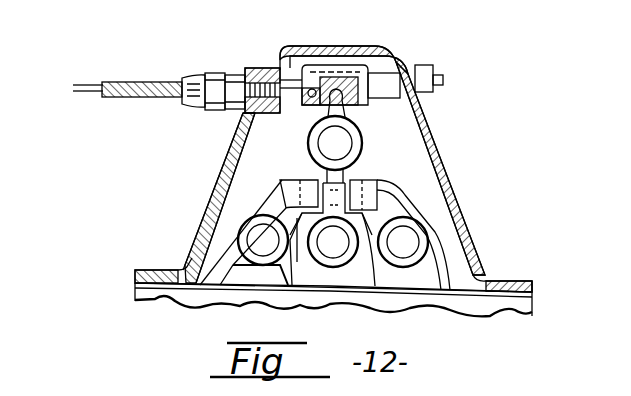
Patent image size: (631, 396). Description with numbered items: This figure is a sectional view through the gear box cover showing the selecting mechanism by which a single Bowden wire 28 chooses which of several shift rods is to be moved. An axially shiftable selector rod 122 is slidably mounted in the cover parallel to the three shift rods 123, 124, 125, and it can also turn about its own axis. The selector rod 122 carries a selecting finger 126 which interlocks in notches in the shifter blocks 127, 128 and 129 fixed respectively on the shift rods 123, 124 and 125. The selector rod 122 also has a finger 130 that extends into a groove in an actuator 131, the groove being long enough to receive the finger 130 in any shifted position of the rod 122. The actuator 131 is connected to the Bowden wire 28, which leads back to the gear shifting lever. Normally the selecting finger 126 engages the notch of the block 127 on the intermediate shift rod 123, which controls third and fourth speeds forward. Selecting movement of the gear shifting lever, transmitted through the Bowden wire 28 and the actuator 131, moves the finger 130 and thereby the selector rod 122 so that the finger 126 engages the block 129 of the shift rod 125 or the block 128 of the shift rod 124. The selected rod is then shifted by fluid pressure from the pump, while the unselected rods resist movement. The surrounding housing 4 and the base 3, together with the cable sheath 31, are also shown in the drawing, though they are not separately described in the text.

The base plate 3 is at (160, 293).
The housing 4 is at (222, 167).
The Bowden wire 28 is at (85, 86).
The cable sheath 31 is at (130, 82).
The selector rod 122 is at (330, 144).
The shift rod 123 is at (333, 245).
The shift rod 124 is at (403, 245).
The shift rod 125 is at (260, 245).
The selecting finger 126 is at (340, 175).
The shifter block 127 is at (333, 183).
The shifter block 128 is at (360, 195).
The shifter block 129 is at (292, 190).
The finger 130 is at (330, 110).
The actuator 131 is at (322, 72).